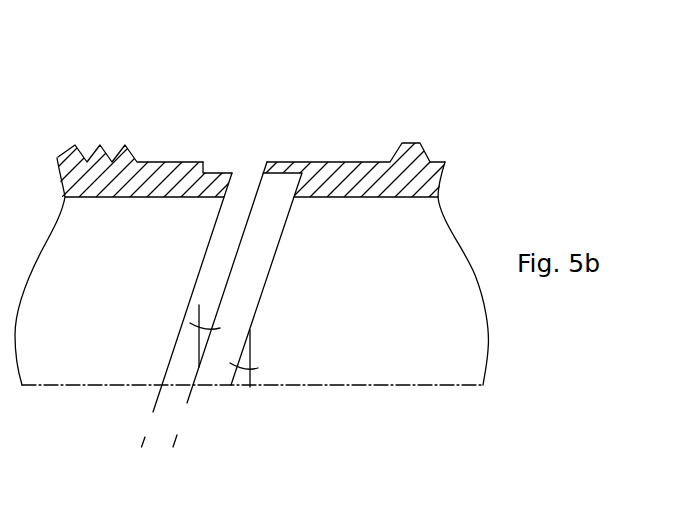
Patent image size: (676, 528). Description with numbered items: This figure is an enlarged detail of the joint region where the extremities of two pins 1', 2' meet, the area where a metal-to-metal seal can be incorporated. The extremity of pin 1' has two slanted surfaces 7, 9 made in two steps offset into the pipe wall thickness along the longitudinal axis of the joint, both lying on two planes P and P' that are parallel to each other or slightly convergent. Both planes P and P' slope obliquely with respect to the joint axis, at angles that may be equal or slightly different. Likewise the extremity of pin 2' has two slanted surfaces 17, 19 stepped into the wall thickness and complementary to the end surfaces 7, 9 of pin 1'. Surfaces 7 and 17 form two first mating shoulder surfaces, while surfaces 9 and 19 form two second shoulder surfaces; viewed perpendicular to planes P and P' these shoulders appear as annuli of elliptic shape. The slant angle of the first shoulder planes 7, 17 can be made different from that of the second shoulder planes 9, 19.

The pin 1' is at (149, 113).
The pin 2' is at (355, 113).
The slanted surface 7 is at (205, 164).
The slanted surface 17 is at (257, 162).
The slanted surface 19 is at (267, 290).
The slanted surface 9 is at (175, 348).
The plane P is at (201, 454).
The plane P' is at (104, 433).